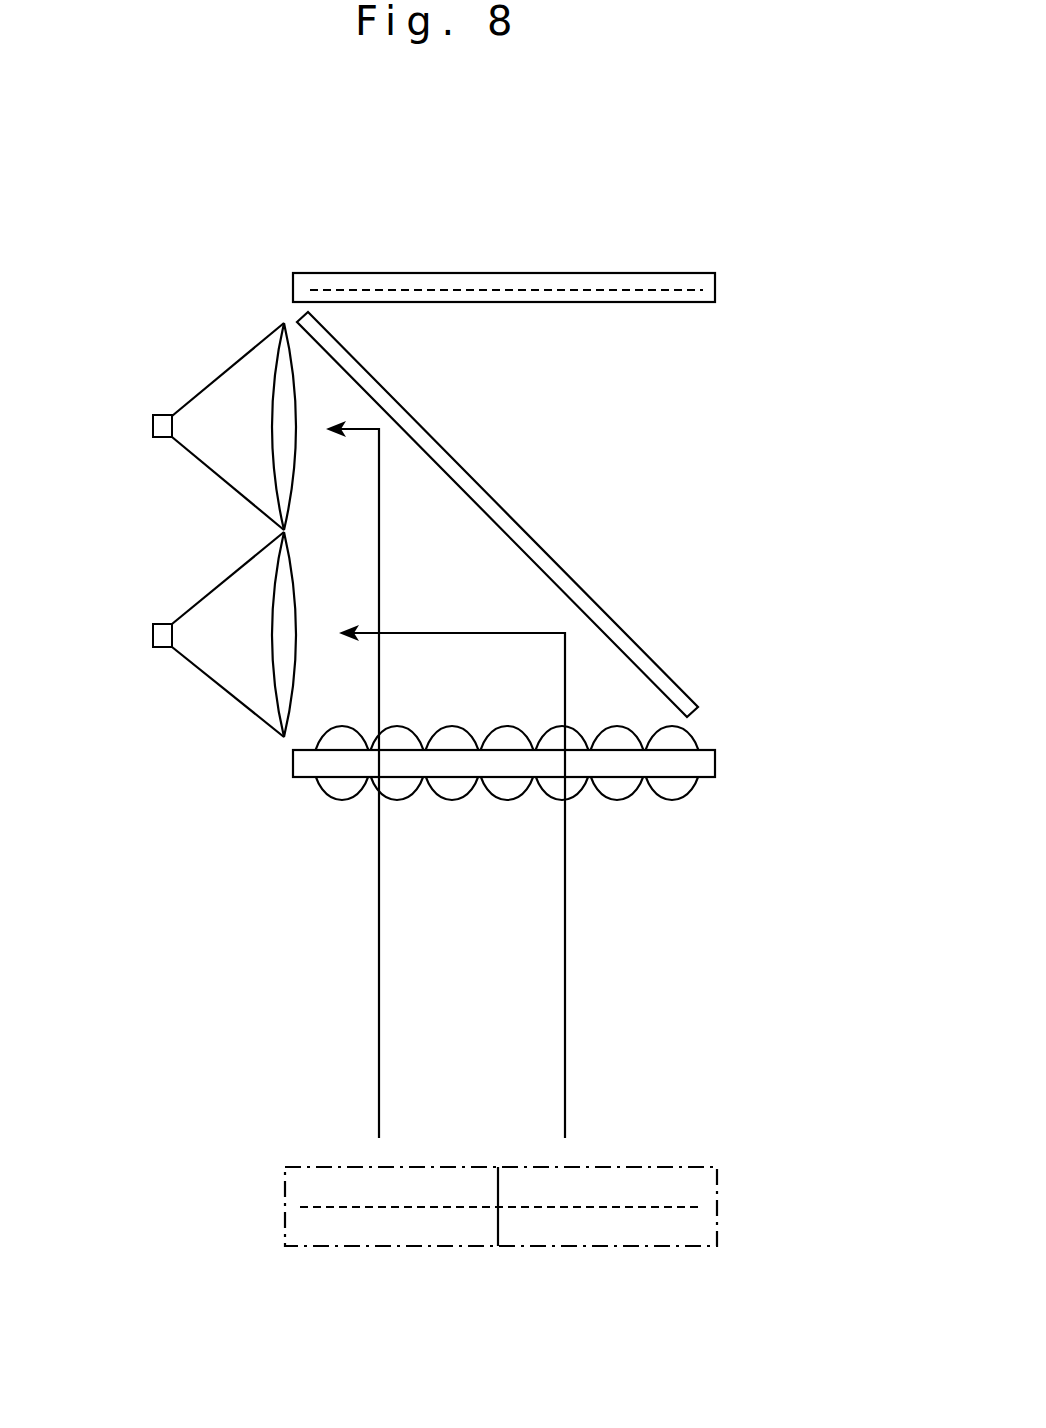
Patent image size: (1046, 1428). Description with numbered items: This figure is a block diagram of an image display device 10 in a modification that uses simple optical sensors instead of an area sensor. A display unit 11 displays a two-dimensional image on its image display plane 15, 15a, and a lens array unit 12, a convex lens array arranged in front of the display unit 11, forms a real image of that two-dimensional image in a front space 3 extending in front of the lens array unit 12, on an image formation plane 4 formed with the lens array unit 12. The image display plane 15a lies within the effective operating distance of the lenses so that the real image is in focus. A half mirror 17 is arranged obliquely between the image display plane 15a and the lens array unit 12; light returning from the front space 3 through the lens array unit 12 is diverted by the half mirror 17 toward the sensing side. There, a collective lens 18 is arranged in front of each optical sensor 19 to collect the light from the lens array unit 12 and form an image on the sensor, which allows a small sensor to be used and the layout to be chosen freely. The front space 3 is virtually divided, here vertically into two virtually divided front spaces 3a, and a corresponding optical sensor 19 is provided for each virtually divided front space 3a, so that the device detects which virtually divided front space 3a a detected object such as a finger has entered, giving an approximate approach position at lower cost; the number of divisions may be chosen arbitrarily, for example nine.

The front space 3 is at (736, 1190).
The virtually divided front space 3a is at (350, 1247).
The image formation plane 4 is at (322, 1205).
The image display device 10 is at (506, 210).
The display unit 11 is at (735, 284).
The lens array unit 12 is at (730, 765).
The image display plane 15 is at (597, 286).
The image display plane 15a is at (653, 308).
The half mirror 17 is at (452, 462).
The collective lens 18 is at (282, 352).
The optical sensor 19 is at (153, 427).